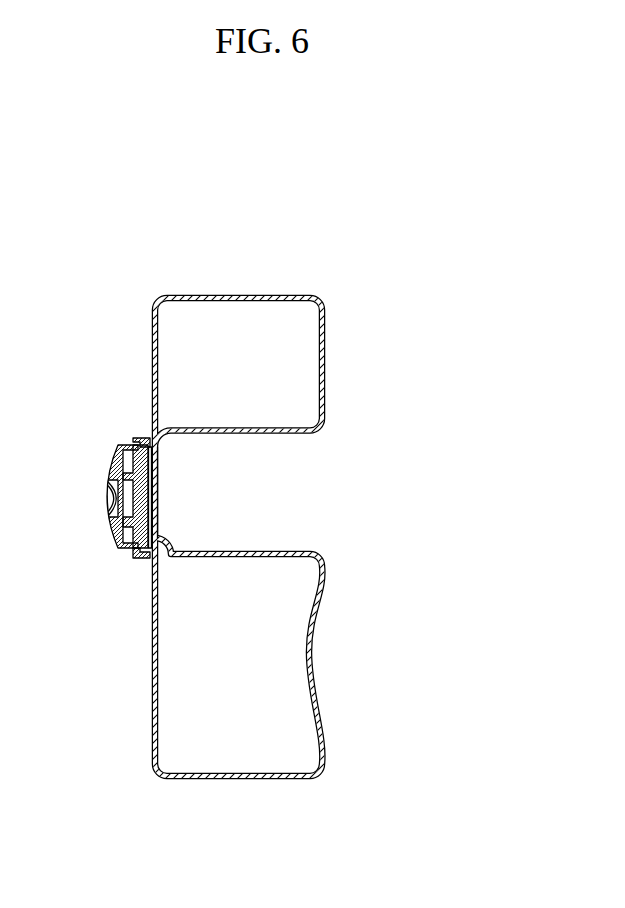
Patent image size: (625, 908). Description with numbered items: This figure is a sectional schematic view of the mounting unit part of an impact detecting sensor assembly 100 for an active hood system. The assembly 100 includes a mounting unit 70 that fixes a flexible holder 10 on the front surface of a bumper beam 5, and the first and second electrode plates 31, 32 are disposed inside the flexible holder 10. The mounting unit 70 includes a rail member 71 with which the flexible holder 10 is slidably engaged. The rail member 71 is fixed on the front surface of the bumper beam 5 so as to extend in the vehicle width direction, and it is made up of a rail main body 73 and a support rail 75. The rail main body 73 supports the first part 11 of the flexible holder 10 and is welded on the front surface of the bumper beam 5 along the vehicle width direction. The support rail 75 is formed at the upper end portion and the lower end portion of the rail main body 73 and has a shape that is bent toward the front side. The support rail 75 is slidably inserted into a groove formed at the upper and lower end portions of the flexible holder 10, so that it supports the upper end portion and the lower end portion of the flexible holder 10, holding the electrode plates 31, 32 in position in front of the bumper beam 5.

The bumper beam 5 is at (148, 684).
The flexible holder 10 is at (128, 440).
The first part 11 is at (158, 460).
The first electrode plate 31 is at (158, 485).
The second electrode plate 32 is at (112, 483).
The mounting unit 70 is at (143, 433).
The rail member 71 is at (282, 477).
The rail main body 73 is at (158, 517).
The support rail 75 is at (141, 439).
The impact detecting sensor assembly 100 is at (176, 475).